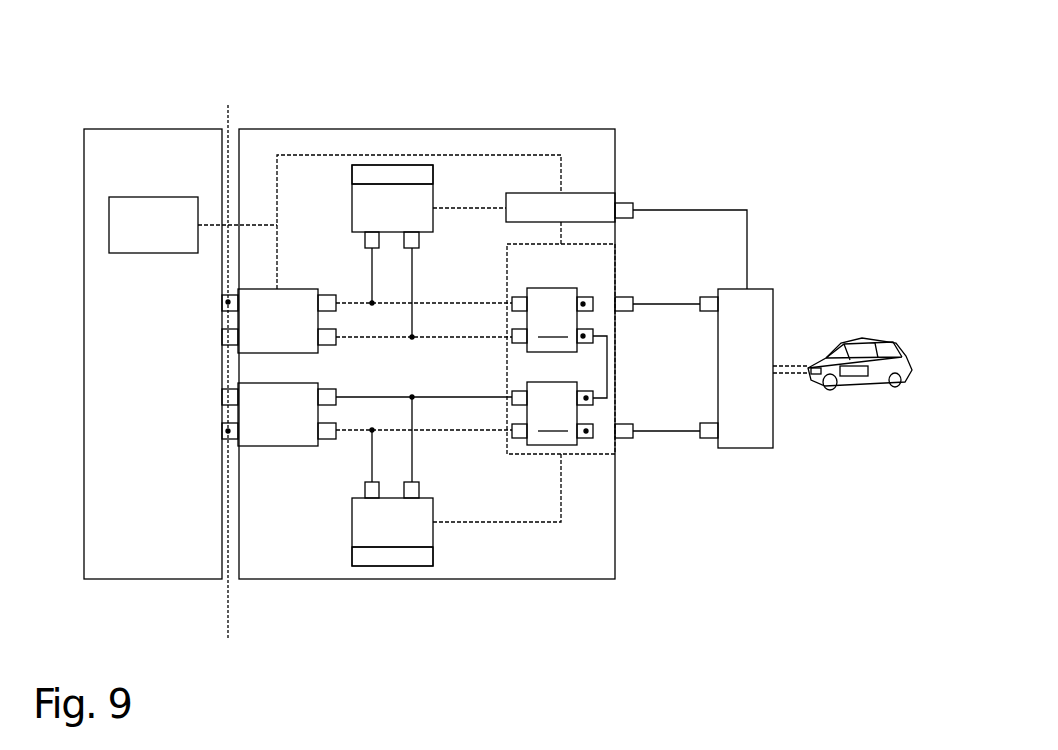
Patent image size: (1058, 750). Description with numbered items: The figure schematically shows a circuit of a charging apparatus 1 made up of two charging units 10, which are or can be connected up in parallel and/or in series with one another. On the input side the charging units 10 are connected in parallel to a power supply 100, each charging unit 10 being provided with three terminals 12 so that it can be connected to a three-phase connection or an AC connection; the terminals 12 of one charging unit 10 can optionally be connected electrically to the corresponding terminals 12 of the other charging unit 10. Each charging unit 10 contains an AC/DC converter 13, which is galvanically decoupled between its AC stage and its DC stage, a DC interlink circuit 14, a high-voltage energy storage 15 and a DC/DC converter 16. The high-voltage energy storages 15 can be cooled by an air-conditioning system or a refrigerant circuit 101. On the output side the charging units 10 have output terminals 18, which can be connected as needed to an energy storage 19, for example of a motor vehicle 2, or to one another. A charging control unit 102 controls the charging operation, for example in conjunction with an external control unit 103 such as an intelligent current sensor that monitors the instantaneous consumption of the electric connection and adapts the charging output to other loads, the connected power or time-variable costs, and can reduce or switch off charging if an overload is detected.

The charging apparatus 1 is at (635, 85).
The motor vehicle 2 is at (843, 375).
The charging unit 10 is at (463, 257).
The terminal 12 is at (234, 370).
The AC/DC converter 13 is at (281, 312).
The DC interlink circuit 14 is at (355, 325).
The high-voltage energy storage 15 is at (400, 200).
The DC/DC converter 16 is at (561, 349).
The output terminal 18 is at (583, 336).
The energy storage 19 is at (749, 334).
The power supply 100 is at (183, 498).
The refrigerant circuit 101 is at (363, 178).
The charging control unit 102 is at (580, 211).
The external control unit 103 is at (143, 213).